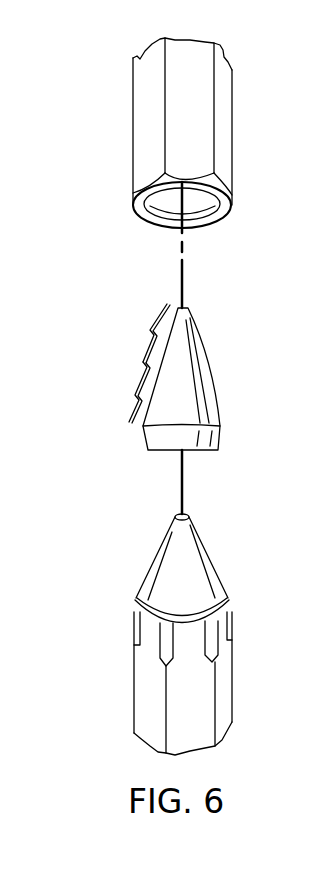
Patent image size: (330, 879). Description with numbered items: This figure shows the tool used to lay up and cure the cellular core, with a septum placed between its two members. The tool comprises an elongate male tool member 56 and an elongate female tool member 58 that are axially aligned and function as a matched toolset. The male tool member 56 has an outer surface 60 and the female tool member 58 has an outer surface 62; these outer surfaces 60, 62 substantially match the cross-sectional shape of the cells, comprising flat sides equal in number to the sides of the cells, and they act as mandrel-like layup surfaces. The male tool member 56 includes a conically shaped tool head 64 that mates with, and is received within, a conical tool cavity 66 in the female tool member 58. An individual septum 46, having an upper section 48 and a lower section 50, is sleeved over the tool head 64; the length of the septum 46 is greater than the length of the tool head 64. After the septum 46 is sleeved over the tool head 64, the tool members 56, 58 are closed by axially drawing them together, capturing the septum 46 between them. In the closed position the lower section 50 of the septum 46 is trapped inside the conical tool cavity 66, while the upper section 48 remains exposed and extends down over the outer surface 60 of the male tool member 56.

The female tool member 58 is at (133, 100).
The outer surface of female tool member 62 is at (142, 165).
The conical tool cavity 66 is at (176, 205).
The septum 46 is at (212, 373).
The lower section 50 is at (152, 333).
The upper section 48 is at (134, 396).
The tool head 64 is at (160, 555).
The male tool member 56 is at (134, 703).
The outer surface of male tool member 60 is at (150, 626).